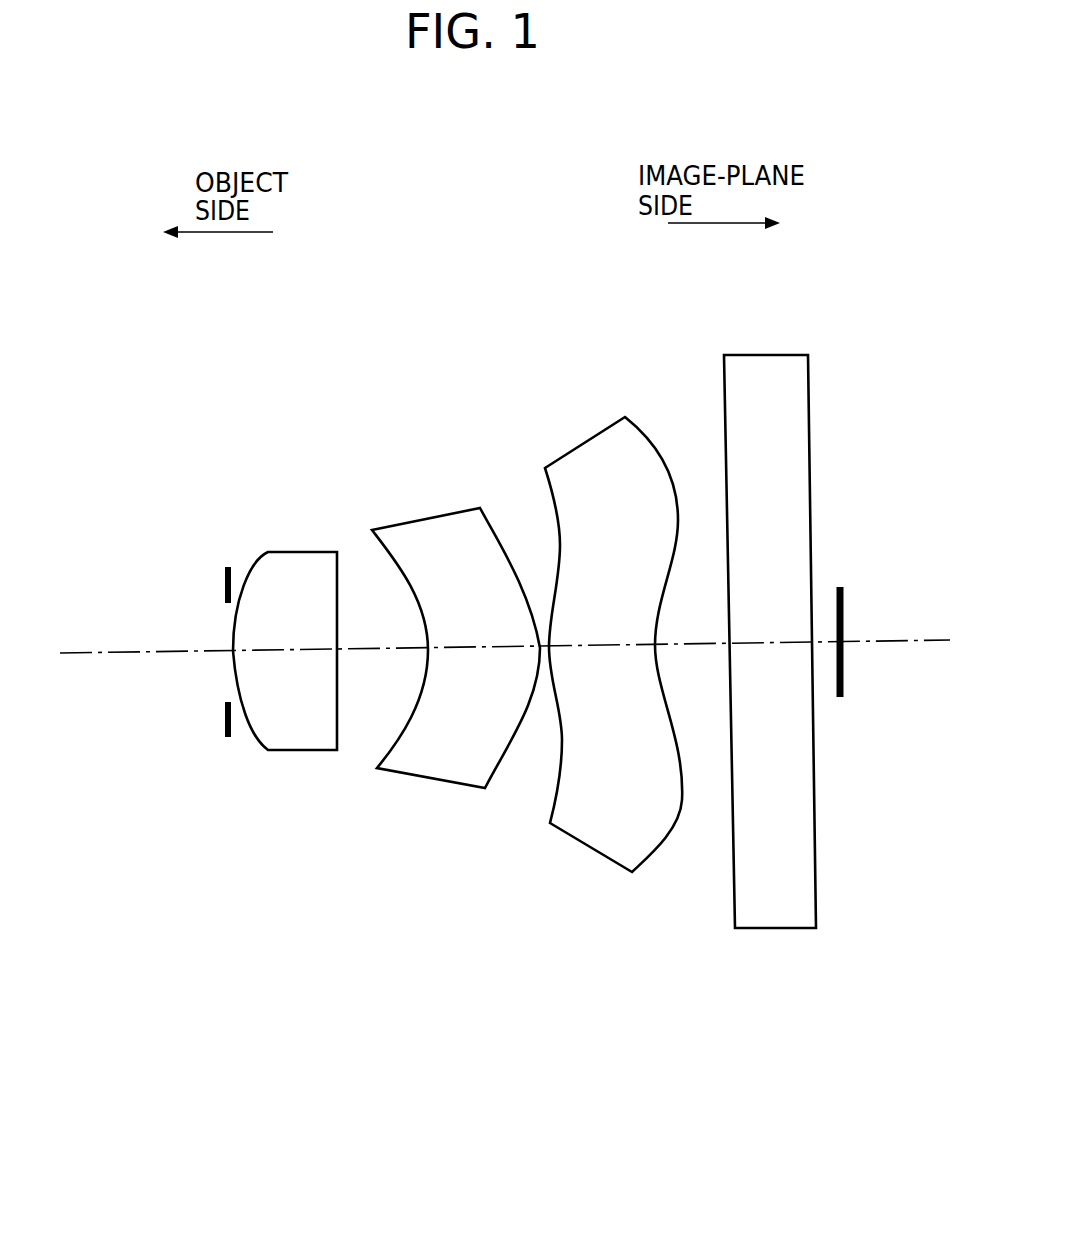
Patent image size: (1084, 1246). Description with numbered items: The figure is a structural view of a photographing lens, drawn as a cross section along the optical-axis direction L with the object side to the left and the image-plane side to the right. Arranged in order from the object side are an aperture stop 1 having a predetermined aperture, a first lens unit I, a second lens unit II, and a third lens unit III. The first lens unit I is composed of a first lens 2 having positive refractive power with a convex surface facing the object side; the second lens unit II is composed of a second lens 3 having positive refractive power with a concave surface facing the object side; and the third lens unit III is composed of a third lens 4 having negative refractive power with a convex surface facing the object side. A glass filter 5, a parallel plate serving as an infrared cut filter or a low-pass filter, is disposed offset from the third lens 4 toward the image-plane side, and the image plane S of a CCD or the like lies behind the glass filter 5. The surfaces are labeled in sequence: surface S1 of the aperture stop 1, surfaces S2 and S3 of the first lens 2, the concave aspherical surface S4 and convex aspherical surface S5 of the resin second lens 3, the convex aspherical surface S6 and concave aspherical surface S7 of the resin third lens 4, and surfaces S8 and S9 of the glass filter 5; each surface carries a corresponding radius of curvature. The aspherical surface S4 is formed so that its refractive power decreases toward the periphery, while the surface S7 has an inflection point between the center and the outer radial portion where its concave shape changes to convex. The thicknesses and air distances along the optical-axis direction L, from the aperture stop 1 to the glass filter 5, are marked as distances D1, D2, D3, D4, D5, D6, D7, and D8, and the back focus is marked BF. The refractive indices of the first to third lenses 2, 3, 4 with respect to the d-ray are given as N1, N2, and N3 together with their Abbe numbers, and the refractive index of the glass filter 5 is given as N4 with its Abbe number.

The aperture stop 1 is at (227, 558).
The first lens 2 is at (295, 540).
The second lens 3 is at (428, 502).
The third lens 4 is at (566, 440).
The glass filter 5 is at (788, 340).
The image plane S is at (858, 598).
The optical-axis direction L is at (108, 653).
The first lens unit I is at (330, 345).
The second lens unit II is at (475, 345).
The third lens unit III is at (653, 337).
The surface S1 is at (226, 590).
The surface S2 is at (235, 636).
The surface S3 is at (338, 597).
The concave surface S4 is at (420, 610).
The convex surface S5 is at (495, 530).
The convex surface S6 is at (556, 590).
The concave surface S7 is at (682, 552).
The surface S8 is at (725, 503).
The surface S9 is at (810, 438).
The distance D1 is at (230, 652).
The distance D2 is at (298, 652).
The distance D3 is at (382, 651).
The distance D4 is at (483, 650).
The distance D5 is at (550, 648).
The distance D6 is at (620, 647).
The distance D7 is at (705, 646).
The distance D8 is at (758, 645).
The back focus BF is at (822, 644).
The refractive index N1 is at (310, 752).
The refractive index N2 is at (417, 776).
The refractive index N3 is at (610, 860).
The refractive index N4 is at (782, 929).